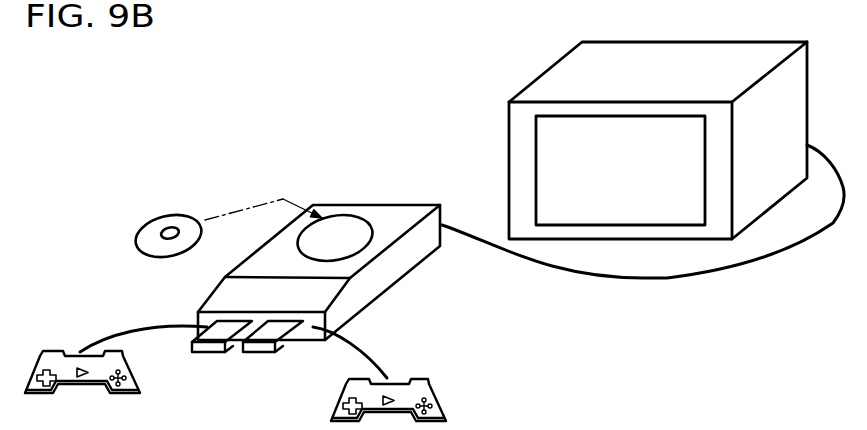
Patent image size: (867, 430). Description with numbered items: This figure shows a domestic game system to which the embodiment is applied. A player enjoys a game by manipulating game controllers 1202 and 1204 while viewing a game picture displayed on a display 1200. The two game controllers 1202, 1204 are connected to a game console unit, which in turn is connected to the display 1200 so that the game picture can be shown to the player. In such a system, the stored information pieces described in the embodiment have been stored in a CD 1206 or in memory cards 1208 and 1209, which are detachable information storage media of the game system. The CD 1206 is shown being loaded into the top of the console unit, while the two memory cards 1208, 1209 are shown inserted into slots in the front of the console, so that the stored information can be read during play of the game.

The display 1200 is at (552, 151).
The game controller 1202 is at (72, 350).
The game controller 1204 is at (402, 379).
The CD 1206 is at (173, 213).
The memory card 1208 is at (200, 353).
The memory card 1209 is at (268, 353).